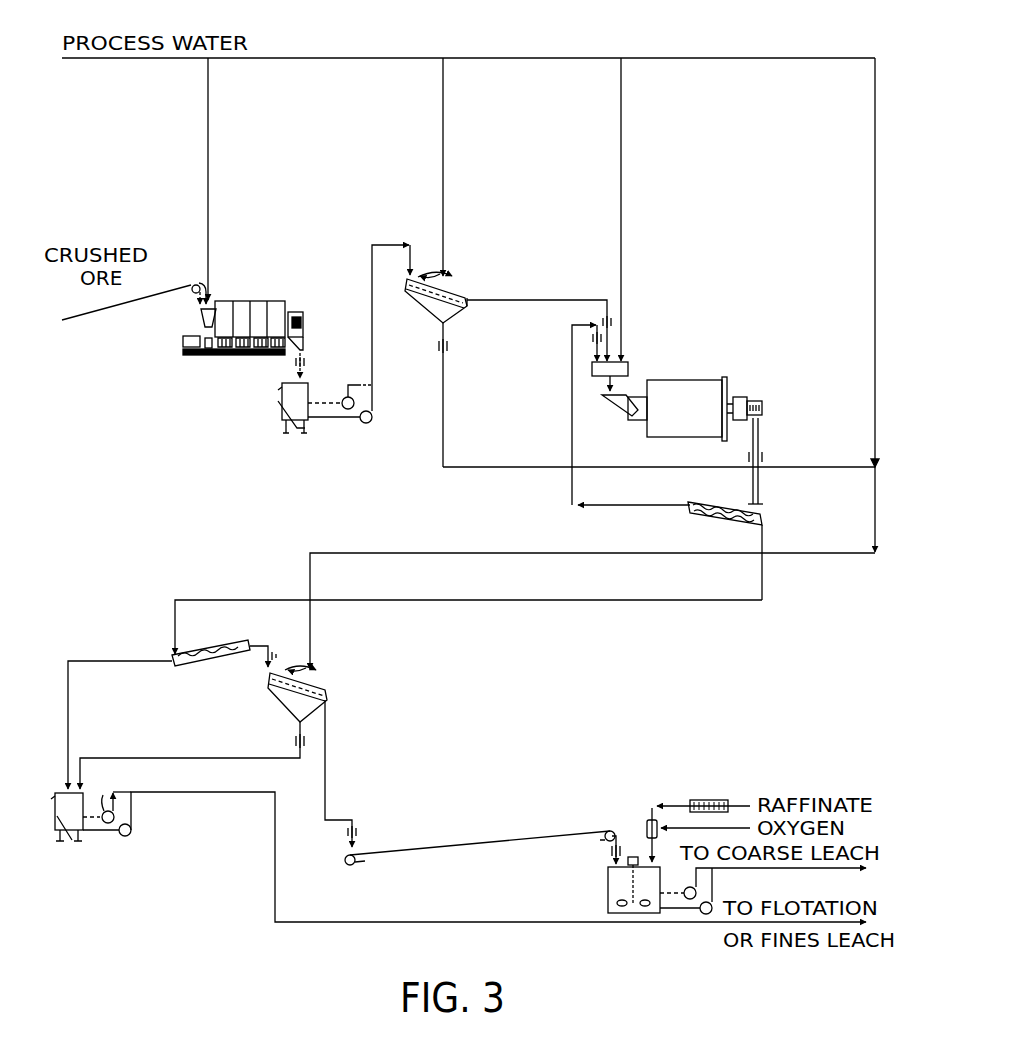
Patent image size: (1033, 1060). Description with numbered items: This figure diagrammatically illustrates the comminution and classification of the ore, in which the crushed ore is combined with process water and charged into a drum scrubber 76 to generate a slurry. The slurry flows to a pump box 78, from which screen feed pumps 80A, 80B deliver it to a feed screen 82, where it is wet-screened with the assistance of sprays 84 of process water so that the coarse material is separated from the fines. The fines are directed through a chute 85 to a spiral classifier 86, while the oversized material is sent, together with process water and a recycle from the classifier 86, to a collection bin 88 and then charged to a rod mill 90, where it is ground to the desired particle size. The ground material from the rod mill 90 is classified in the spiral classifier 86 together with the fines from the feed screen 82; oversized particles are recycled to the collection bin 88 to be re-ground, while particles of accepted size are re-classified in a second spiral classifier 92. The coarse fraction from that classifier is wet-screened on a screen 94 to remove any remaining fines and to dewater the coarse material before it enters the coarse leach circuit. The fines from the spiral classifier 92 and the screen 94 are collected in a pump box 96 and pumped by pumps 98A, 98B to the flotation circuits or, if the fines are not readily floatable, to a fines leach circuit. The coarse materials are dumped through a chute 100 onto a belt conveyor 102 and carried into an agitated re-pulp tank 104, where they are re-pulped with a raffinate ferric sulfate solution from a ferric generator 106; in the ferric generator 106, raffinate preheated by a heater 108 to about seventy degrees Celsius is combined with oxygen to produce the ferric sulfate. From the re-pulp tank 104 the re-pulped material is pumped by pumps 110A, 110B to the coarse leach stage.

The drum scrubber 76 is at (257, 300).
The pump box 78 is at (283, 400).
The screen feed pump 80A is at (369, 424).
The screen feed pump 80B is at (349, 397).
The feed screen 82 is at (462, 298).
The sprays 84 is at (450, 275).
The chute 85 is at (458, 348).
The spiral classifier 86 is at (700, 512).
The collection bin 88 is at (626, 372).
The rod mill 90 is at (690, 395).
The spiral classifier 92 is at (205, 658).
The screen 94 is at (325, 698).
The pump box 96 is at (70, 836).
The pump 98A is at (129, 836).
The pump 98B is at (106, 811).
The chute 100 is at (360, 833).
The belt conveyor 102 is at (510, 834).
The agitated re-pulp tank 104 is at (607, 890).
The ferric generator 106 is at (648, 822).
The heater 108 is at (708, 800).
The pump 110A is at (708, 915).
The pump 110B is at (690, 900).